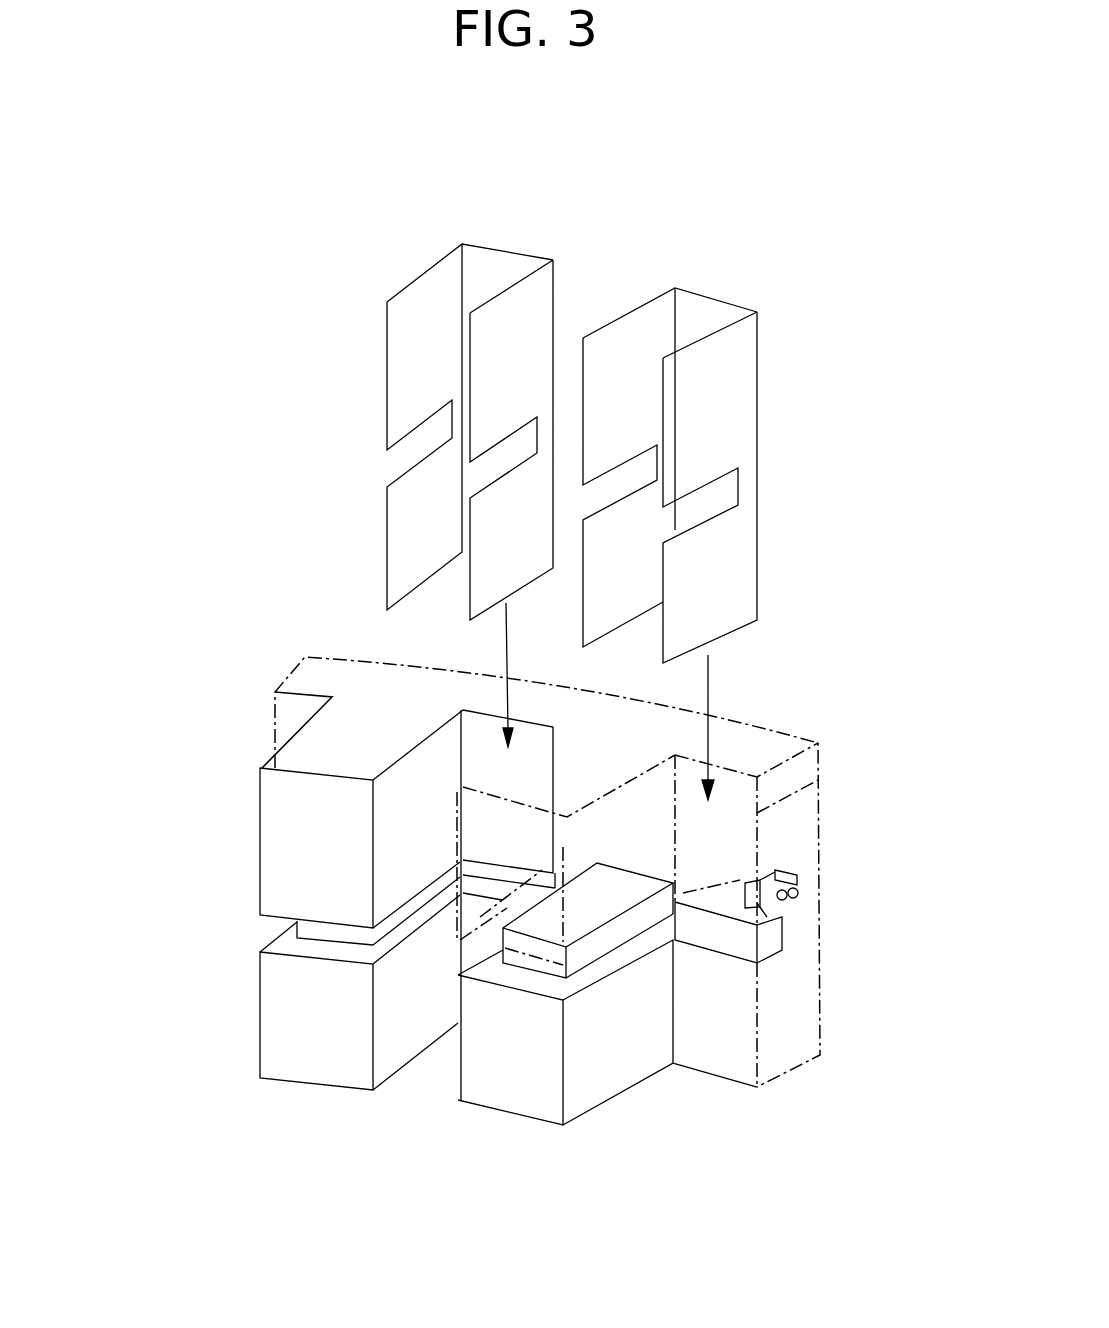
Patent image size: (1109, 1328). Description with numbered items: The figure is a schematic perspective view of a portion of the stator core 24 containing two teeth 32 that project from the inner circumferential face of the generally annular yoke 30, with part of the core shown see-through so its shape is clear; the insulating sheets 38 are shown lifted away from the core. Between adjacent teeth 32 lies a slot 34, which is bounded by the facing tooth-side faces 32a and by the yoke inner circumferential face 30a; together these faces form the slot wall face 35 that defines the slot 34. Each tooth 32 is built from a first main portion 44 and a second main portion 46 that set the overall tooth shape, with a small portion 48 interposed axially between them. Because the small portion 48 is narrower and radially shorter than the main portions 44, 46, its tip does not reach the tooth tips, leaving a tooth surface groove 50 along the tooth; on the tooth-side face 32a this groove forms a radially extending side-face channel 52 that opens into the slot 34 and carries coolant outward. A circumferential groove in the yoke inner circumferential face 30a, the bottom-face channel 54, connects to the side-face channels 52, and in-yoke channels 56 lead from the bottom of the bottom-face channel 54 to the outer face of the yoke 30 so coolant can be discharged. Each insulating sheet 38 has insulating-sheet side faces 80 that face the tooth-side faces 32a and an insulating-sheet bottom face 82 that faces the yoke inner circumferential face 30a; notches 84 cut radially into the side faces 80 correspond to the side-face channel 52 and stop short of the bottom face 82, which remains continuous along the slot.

The stator core 24 is at (627, 873).
The yoke 30 is at (778, 750).
The yoke inner circumferential face 30a is at (718, 1076).
The tooth 32 is at (526, 945).
The tooth-side face 32a is at (633, 1037).
The slot 34 is at (436, 775).
The slot wall face 35 is at (682, 1200).
The insulating sheet 38 is at (655, 440).
The first main portion 44 is at (290, 815).
The second main portion 46 is at (286, 1034).
The small portion 48 is at (328, 930).
The tooth surface groove 50 is at (258, 927).
The side-face channel 52 is at (422, 930).
The bottom-face channel 54 is at (745, 985).
The in-yoke channel 56 is at (792, 903).
The insulating-sheet side face 80 is at (613, 357).
The insulating-sheet bottom face 82 is at (703, 323).
The notch 84 is at (700, 518).